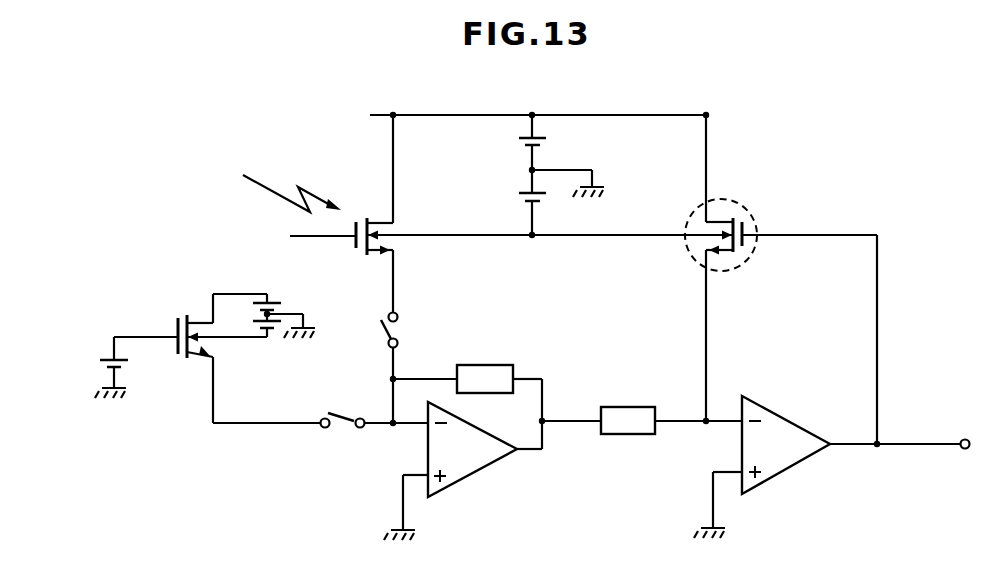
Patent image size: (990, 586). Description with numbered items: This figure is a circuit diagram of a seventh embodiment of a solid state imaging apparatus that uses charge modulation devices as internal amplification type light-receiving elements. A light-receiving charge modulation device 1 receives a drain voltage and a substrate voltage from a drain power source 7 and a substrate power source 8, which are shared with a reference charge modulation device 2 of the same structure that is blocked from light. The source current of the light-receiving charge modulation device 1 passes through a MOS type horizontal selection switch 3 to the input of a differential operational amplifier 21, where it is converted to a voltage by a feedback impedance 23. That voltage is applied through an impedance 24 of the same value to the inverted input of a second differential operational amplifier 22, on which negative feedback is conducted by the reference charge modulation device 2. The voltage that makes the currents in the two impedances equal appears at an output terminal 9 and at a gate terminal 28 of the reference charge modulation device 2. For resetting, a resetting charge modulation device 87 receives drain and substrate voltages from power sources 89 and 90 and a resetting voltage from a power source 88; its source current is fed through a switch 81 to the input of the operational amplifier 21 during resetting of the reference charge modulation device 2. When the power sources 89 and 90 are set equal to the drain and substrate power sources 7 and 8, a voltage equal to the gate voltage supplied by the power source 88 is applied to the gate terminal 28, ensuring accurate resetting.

The light-receiving charge modulation device 1 is at (362, 258).
The reference charge modulation device 2 is at (740, 269).
The horizontal selection switch 3 is at (399, 331).
The drain power source 7 is at (546, 144).
The substrate power source 8 is at (516, 194).
The output terminal 9 is at (965, 450).
The differential operational amplifier 21 is at (496, 463).
The differential operational amplifier 22 is at (806, 458).
The feedback impedance 23 is at (492, 365).
The impedance 24 is at (630, 406).
The gate terminal 28 is at (818, 234).
The switch 81 is at (343, 439).
The resetting charge modulation device 87 is at (183, 358).
The power source 88 is at (102, 362).
The drain power source 89 is at (281, 302).
The substrate power source 90 is at (277, 326).